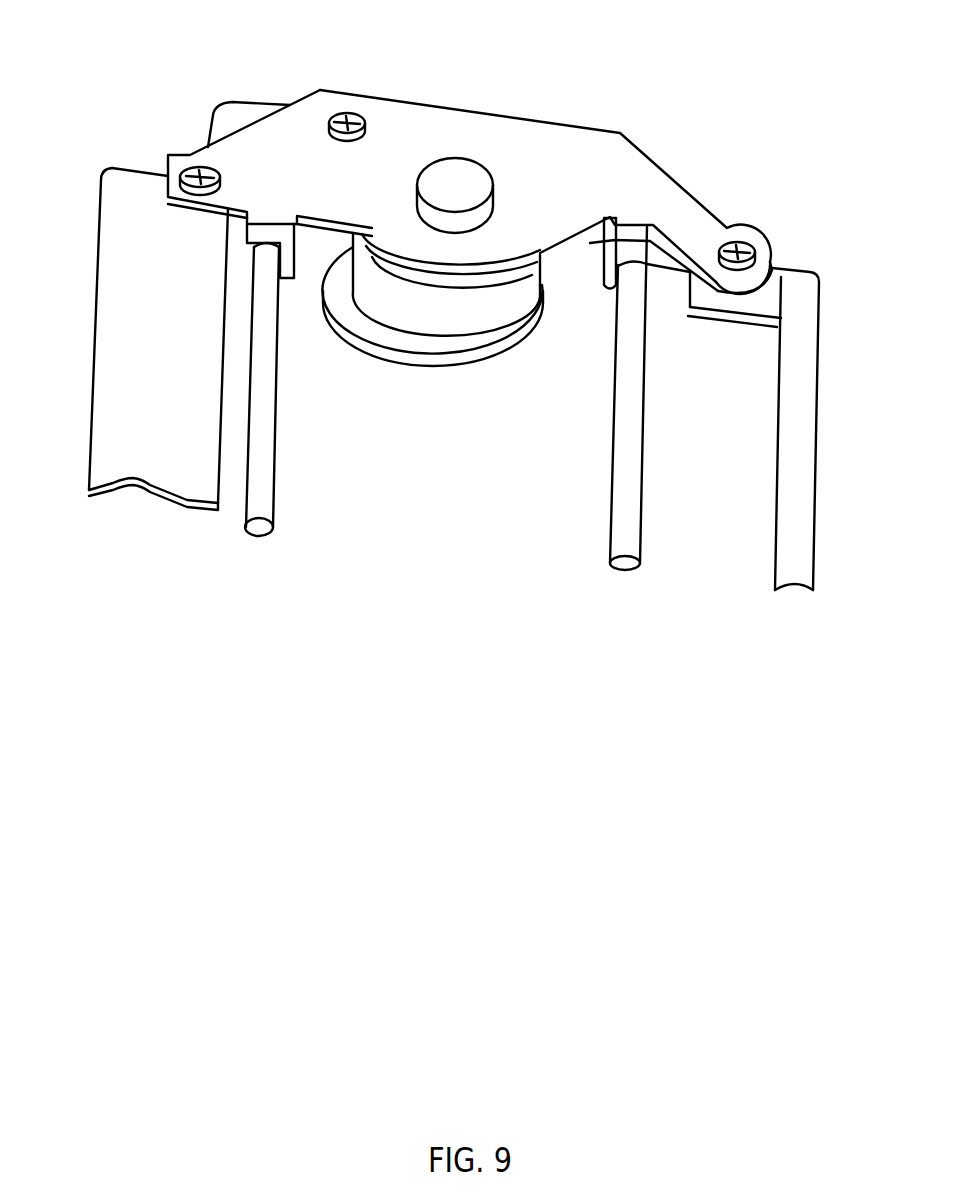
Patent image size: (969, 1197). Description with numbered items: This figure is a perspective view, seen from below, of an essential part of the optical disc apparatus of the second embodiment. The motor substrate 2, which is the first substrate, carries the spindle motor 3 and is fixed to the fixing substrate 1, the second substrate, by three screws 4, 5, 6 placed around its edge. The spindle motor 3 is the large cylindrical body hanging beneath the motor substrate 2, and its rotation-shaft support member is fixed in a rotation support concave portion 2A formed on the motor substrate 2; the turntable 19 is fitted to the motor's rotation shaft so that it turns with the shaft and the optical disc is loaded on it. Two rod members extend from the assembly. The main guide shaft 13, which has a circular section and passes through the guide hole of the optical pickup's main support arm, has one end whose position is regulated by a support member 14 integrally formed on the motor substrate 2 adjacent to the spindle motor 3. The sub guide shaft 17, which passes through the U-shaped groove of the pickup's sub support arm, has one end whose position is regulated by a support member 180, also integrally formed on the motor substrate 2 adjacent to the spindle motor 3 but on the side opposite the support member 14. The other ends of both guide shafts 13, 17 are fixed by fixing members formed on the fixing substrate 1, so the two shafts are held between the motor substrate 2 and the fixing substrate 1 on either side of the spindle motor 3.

The fixing substrate 1 is at (113, 420).
The motor substrate 2 is at (622, 132).
The rotation support concave portion 2A is at (460, 168).
The spindle motor 3 is at (445, 374).
The screw 4 is at (752, 243).
The screw 5 is at (358, 116).
The screw 6 is at (191, 160).
The main guide shaft 13 is at (630, 488).
The support member 14 is at (625, 249).
The sub guide shaft 17 is at (262, 468).
The turntable 19 is at (437, 366).
The support member 180 is at (282, 253).